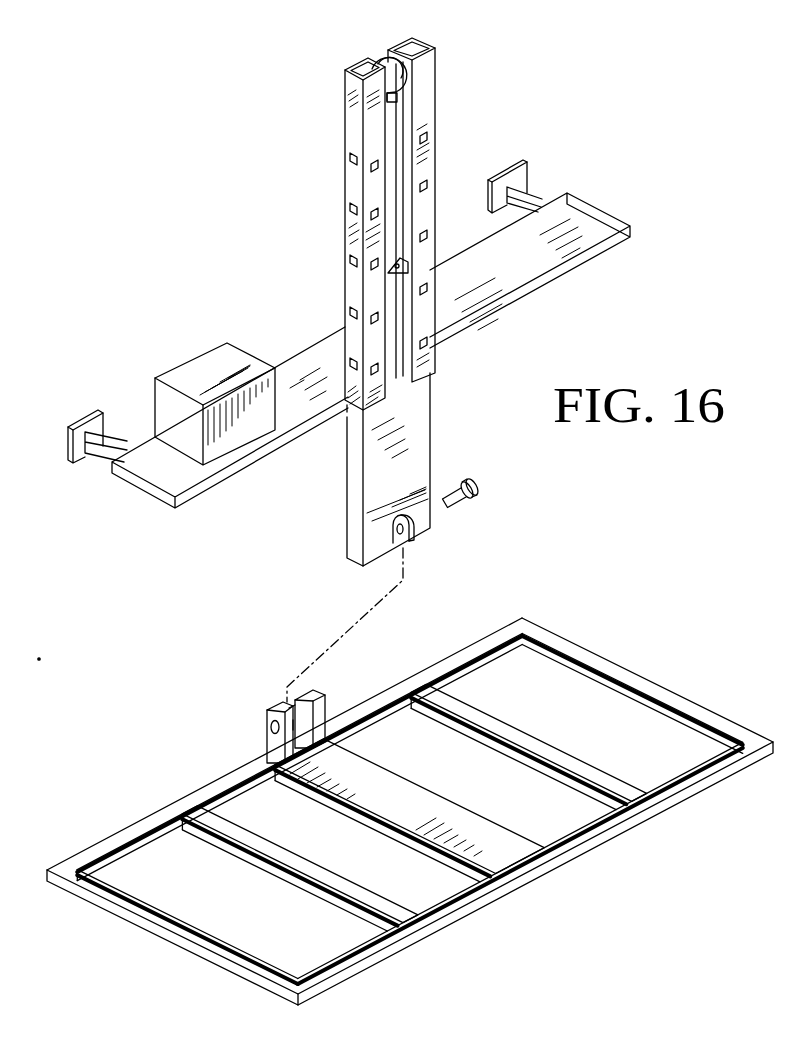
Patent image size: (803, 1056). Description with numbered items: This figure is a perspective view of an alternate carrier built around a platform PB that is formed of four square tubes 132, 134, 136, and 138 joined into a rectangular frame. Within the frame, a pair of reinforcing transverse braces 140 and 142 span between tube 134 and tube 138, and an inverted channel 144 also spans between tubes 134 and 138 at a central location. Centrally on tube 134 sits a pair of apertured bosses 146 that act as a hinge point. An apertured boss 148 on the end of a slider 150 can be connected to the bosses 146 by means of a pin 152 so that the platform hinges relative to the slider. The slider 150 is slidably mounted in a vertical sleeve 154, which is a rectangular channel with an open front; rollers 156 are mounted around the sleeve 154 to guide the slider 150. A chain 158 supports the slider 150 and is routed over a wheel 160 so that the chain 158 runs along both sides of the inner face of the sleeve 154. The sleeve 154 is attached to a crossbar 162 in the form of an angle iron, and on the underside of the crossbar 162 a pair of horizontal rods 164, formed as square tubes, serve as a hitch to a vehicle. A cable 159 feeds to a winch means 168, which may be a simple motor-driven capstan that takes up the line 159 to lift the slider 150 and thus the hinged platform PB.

The square tube 132 is at (243, 957).
The square tube 134 is at (177, 807).
The square tube 136 is at (622, 670).
The square tube 138 is at (607, 840).
The transverse brace 140 is at (323, 878).
The transverse brace 142 is at (567, 755).
The inverted channel 144 is at (430, 807).
The apertured bosses 146 is at (322, 700).
The apertured boss 148 is at (362, 538).
The slider 150 is at (430, 417).
The pin 152 is at (478, 487).
The vertical sleeve 154 is at (437, 77).
The rollers 156 is at (346, 210).
The chain 158 is at (403, 177).
The cable 159 is at (323, 372).
The wheel 160 is at (373, 73).
The crossbar 162 is at (555, 261).
The horizontal rods 164 is at (544, 195).
The winch means 168 is at (222, 360).
The platform PB is at (410, 817).